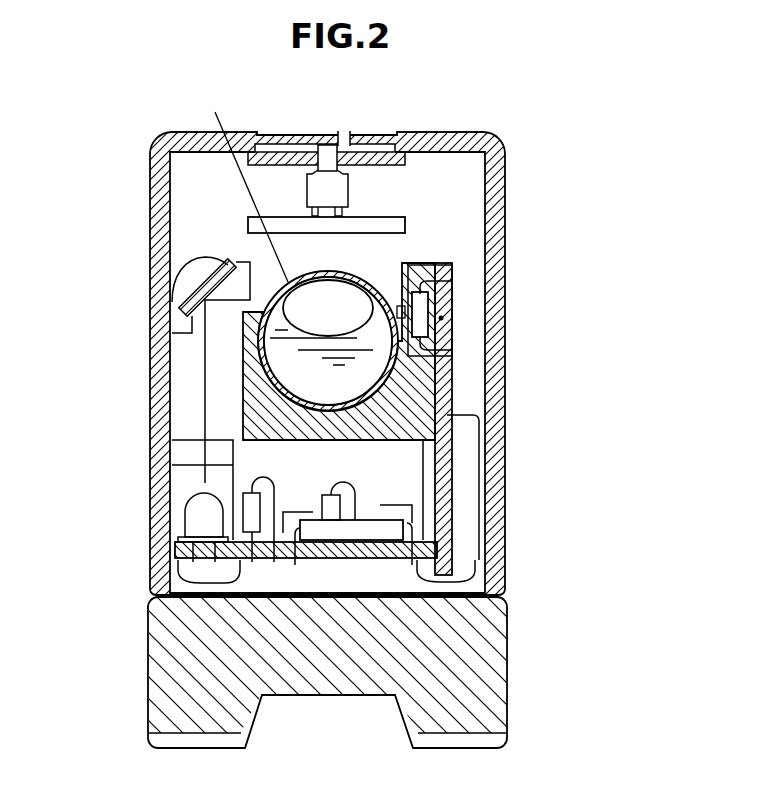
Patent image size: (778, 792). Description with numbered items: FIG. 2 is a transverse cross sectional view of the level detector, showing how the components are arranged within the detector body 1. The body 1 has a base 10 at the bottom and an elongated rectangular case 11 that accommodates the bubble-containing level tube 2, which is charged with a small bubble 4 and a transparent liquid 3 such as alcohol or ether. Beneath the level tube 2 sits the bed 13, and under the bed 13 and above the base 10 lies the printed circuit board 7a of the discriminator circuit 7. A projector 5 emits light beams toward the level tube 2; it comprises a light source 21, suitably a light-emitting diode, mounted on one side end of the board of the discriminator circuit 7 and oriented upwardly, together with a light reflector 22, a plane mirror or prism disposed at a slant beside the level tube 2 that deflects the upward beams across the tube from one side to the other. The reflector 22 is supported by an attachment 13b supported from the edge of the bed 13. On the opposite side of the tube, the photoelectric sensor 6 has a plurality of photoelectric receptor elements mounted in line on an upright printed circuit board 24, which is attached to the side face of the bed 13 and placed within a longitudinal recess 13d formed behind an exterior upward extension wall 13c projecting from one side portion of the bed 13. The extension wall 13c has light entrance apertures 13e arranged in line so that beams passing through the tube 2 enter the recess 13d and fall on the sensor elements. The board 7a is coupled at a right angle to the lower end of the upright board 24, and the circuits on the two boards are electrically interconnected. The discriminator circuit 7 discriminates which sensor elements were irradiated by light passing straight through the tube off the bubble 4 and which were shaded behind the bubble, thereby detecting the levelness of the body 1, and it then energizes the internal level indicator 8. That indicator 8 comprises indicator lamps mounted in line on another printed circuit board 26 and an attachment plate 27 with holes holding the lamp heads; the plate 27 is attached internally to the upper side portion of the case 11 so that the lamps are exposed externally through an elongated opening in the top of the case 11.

The body 1 is at (150, 224).
The bubble-containing level tube 2 is at (244, 182).
The transparent liquid 3 is at (290, 370).
The bubble 4 is at (338, 293).
The projector 5 is at (176, 513).
The photoelectric sensor 6 is at (430, 318).
The discriminator circuit 7 is at (364, 506).
The printed circuit board 7a is at (353, 559).
The internal level indicator 8 is at (340, 142).
The base 10 is at (480, 663).
The elongated rectangular case 11 is at (495, 181).
The bed 13 is at (410, 398).
The attachment 13b is at (255, 283).
The upward extension wall 13c is at (422, 262).
The longitudinal recess 13d is at (430, 344).
The light entrance apertures 13e is at (416, 264).
The light source 21 is at (196, 523).
The light reflector 22 is at (173, 334).
The printed circuit board 24 is at (440, 432).
The printed circuit board 26 is at (378, 226).
The attachment plate 27 is at (295, 157).